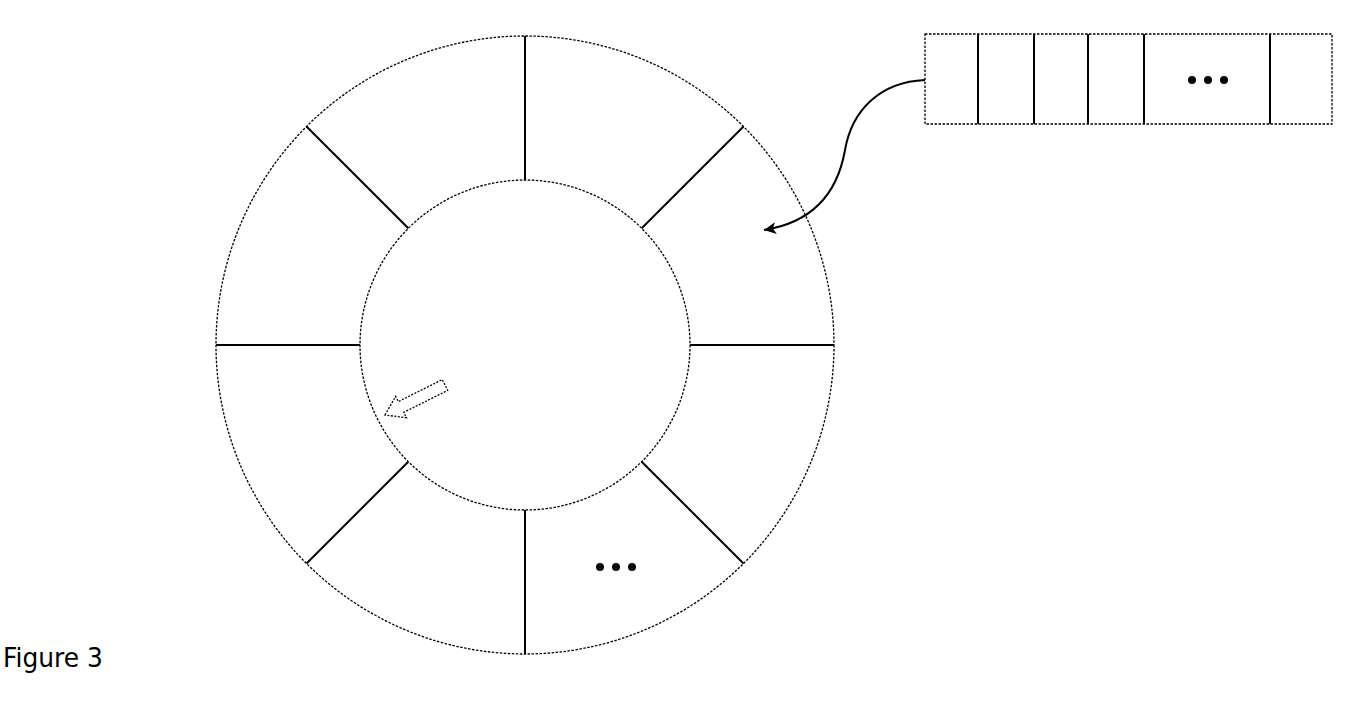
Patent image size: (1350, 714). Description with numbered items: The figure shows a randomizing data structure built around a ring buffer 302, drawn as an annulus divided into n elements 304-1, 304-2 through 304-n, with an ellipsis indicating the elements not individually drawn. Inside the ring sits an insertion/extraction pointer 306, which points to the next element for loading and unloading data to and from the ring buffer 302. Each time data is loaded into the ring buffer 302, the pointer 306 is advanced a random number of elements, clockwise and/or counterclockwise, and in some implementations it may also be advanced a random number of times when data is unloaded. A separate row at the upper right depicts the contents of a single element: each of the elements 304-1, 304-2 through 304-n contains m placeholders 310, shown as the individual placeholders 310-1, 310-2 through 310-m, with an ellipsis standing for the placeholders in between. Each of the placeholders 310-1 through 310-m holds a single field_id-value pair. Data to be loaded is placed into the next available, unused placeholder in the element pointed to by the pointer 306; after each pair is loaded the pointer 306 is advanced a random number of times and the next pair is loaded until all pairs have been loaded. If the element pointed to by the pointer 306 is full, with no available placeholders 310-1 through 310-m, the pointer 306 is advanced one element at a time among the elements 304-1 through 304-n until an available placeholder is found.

The ring buffer 302 is at (288, 147).
The element 304-1 is at (254, 413).
The element 304-2 is at (274, 260).
The element 304-n is at (391, 578).
The insertion/extraction pointer 306 is at (416, 372).
The placeholders 310 is at (1048, 132).
The placeholder 310-1 is at (950, 106).
The placeholder 310-2 is at (1007, 106).
The placeholder 310-m is at (1303, 106).